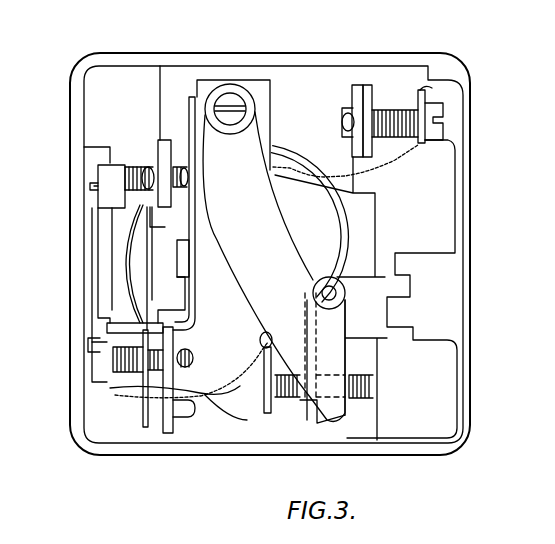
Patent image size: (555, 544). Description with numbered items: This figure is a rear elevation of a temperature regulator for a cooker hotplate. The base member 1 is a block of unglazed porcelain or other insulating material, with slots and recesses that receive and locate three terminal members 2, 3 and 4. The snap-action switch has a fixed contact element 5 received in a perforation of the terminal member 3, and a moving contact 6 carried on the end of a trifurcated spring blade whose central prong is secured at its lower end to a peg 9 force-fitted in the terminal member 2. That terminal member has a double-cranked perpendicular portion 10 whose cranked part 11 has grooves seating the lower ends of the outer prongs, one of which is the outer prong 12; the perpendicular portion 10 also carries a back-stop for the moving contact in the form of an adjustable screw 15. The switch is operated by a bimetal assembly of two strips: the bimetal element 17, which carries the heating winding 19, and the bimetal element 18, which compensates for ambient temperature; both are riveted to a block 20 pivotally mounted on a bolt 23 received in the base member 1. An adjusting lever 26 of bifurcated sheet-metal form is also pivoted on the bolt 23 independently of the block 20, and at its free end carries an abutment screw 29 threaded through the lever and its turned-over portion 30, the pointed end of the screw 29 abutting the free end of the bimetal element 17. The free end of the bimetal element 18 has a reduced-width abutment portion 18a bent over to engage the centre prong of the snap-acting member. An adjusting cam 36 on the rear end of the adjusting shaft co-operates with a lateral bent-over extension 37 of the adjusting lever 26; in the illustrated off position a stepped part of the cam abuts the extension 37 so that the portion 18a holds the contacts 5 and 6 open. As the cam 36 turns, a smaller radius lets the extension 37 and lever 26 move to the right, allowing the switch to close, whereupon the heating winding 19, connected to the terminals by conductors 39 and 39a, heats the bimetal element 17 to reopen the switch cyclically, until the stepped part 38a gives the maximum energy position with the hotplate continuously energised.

The base member 1 is at (347, 72).
The terminal member 2 is at (207, 400).
The terminal member 3 is at (163, 148).
The terminal member 4 is at (372, 97).
The contact element 5 is at (160, 154).
The moving contact 6 is at (148, 218).
The peg 9 is at (157, 415).
The perpendicular portion 10 is at (122, 327).
The cranked part 11 is at (118, 342).
The outer prong 12 is at (105, 300).
The adjustable screw 15 is at (87, 190).
The bimetal element 17 is at (278, 428).
The bimetal element 18 is at (198, 313).
The abutment portion 18a is at (143, 400).
The heating winding 19 is at (261, 333).
The block 20 is at (260, 78).
The bolt 23 is at (230, 90).
The adjusting lever 26 is at (347, 407).
The screw 29 is at (372, 385).
The turned-over portion 30 is at (343, 408).
The adjusting cam 36 is at (322, 242).
The lateral bent-over extension 37 is at (182, 253).
The stepped part 38a is at (247, 420).
The conductor 39 is at (222, 400).
The conductor 39a is at (388, 152).